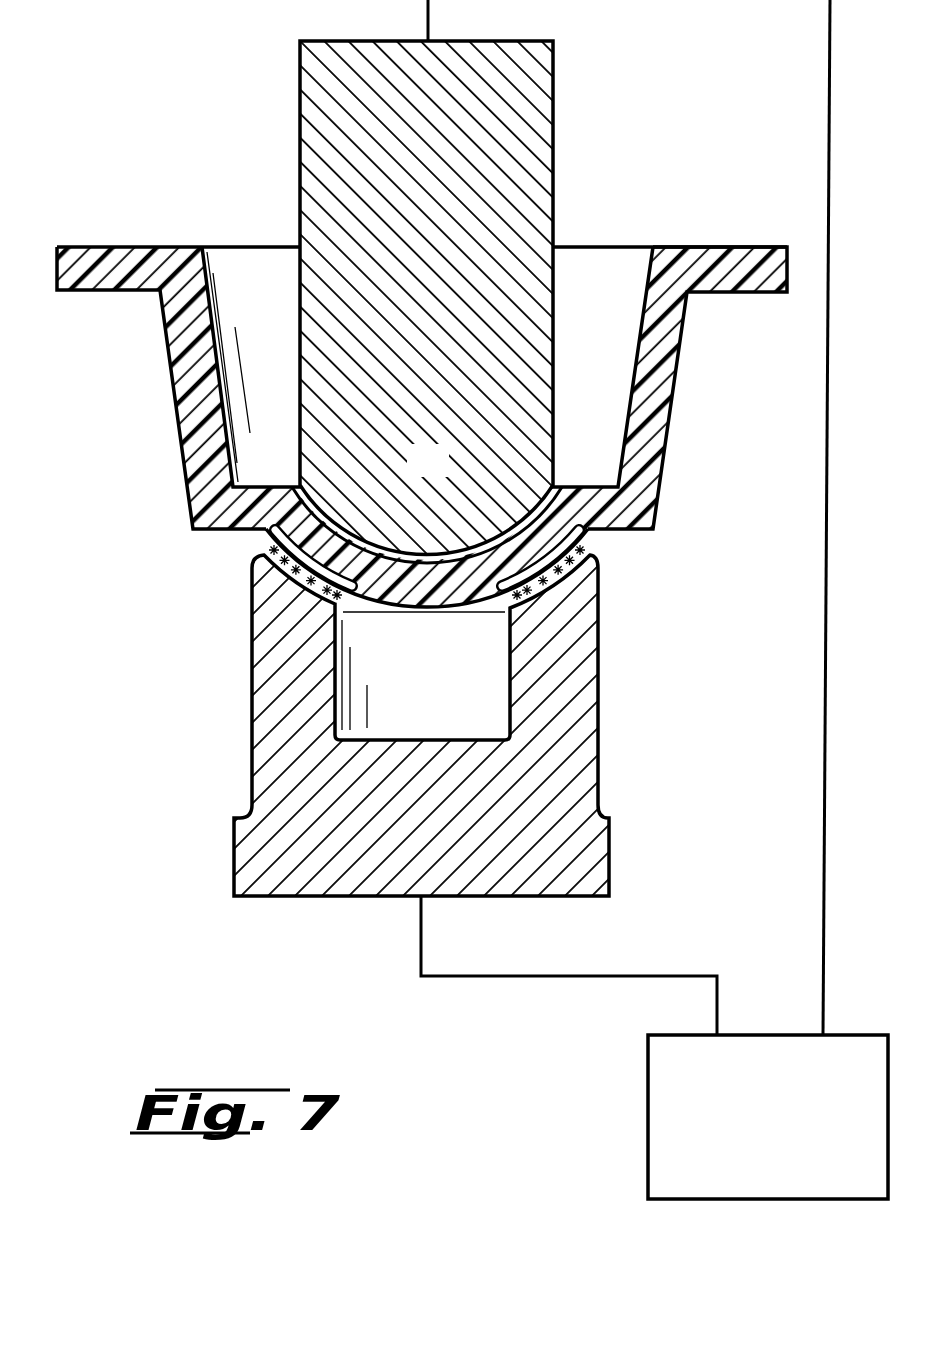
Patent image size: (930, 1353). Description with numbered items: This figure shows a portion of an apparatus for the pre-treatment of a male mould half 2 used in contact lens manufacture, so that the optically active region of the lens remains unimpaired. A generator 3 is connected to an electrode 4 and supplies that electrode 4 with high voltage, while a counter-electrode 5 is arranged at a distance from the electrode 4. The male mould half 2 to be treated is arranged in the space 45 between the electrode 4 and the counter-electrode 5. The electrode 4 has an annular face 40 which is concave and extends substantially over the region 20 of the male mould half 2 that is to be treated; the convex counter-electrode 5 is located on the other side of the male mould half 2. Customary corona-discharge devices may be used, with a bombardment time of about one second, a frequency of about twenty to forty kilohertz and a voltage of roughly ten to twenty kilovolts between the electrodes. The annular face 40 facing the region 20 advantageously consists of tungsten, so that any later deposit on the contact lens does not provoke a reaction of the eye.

The male mould half 2 is at (187, 406).
The generator 3 is at (675, 1127).
The electrode 4 is at (583, 729).
The counter-electrode 5 is at (530, 165).
The region of the male mould half to be treated 20 is at (497, 522).
The annular face 40 is at (523, 610).
The space between the electrodes 45 is at (252, 588).